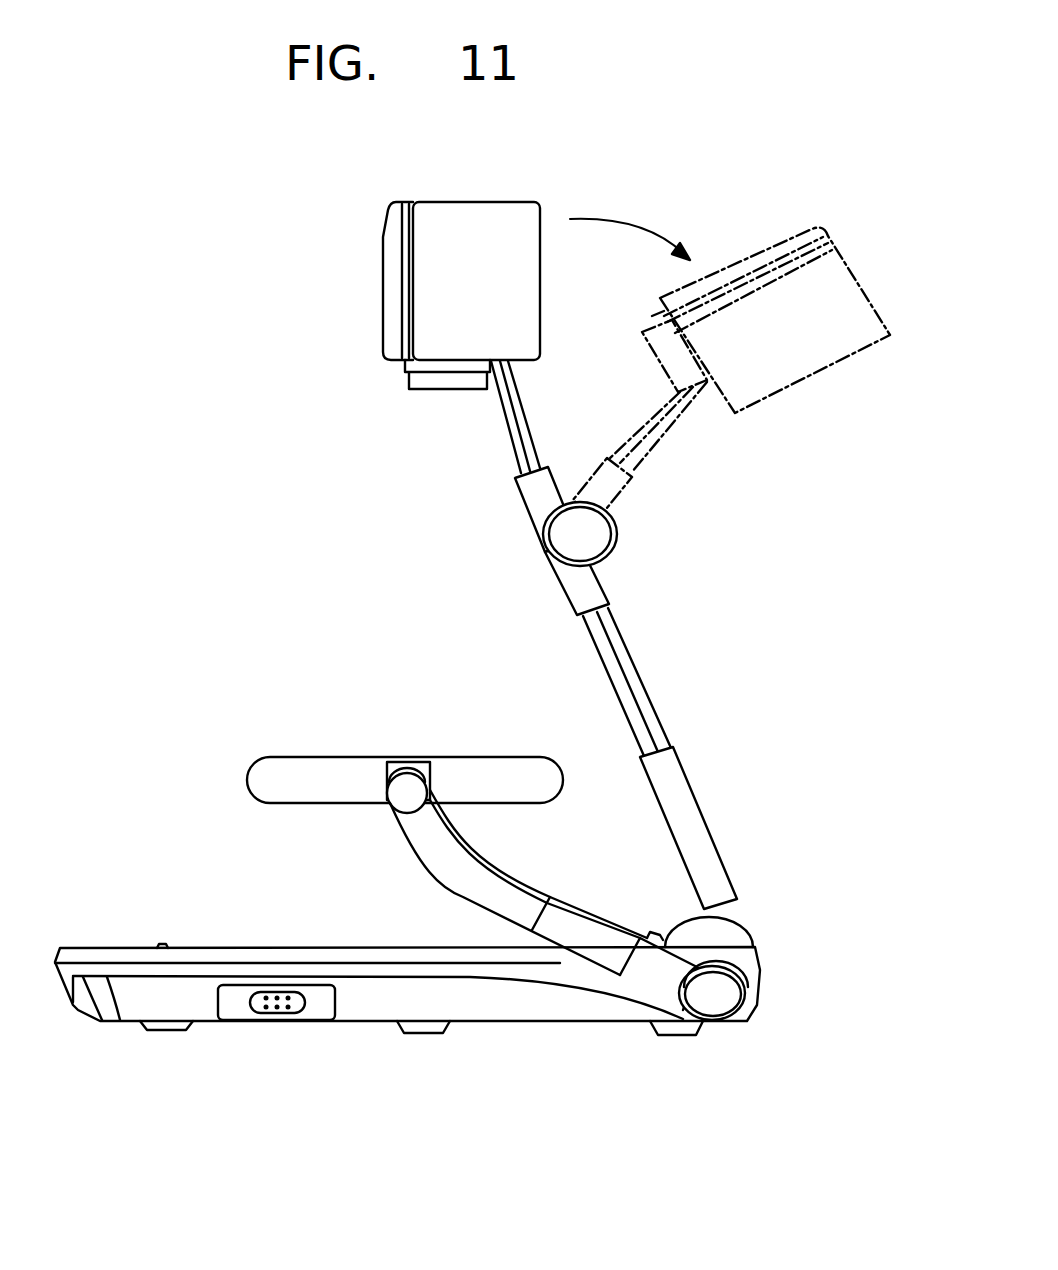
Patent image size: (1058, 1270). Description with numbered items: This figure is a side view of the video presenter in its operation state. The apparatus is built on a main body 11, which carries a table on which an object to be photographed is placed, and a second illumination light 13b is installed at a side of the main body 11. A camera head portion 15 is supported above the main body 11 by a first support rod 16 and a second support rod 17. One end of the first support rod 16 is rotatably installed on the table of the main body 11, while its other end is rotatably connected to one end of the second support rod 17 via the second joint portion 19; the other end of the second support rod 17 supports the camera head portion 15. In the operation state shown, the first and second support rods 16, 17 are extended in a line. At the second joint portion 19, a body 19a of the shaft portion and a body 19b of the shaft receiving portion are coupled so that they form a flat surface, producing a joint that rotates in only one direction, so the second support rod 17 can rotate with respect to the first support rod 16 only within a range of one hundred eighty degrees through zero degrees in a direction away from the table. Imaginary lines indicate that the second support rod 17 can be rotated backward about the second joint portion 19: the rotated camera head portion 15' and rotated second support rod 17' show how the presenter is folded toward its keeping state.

The main body 11 is at (360, 1015).
The second illumination light 13b is at (306, 775).
The camera head portion 15 is at (461, 263).
The camera head portion in rotated position 15' is at (766, 300).
The first support rod 16 is at (633, 692).
The second support rod 17 is at (475, 417).
The second support rod in rotated position 17' is at (640, 450).
The second joint portion 19 is at (563, 540).
The body of the shaft portion 19a is at (522, 500).
The body of the shaft receiving portion 19b is at (563, 592).